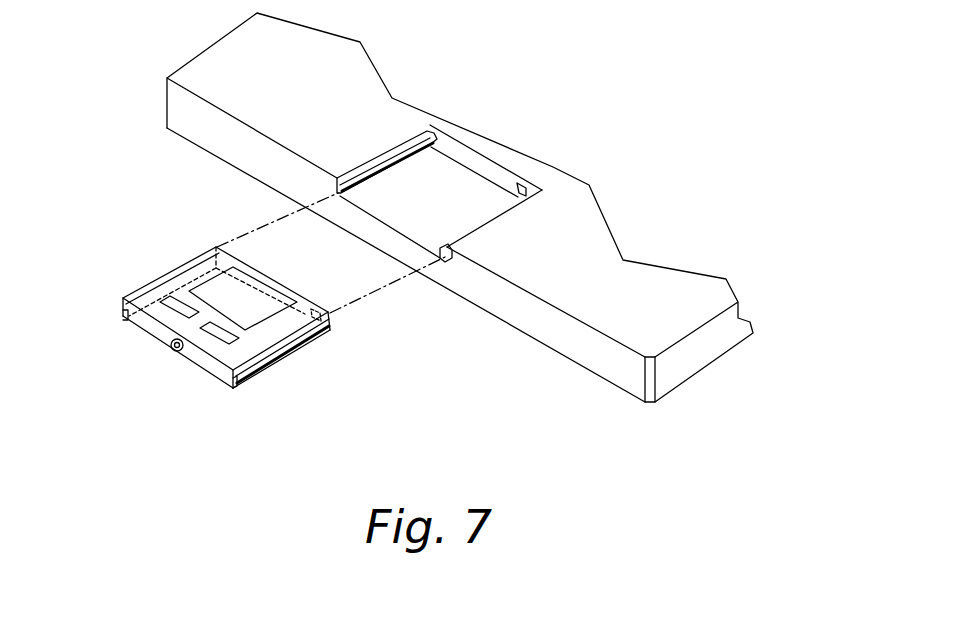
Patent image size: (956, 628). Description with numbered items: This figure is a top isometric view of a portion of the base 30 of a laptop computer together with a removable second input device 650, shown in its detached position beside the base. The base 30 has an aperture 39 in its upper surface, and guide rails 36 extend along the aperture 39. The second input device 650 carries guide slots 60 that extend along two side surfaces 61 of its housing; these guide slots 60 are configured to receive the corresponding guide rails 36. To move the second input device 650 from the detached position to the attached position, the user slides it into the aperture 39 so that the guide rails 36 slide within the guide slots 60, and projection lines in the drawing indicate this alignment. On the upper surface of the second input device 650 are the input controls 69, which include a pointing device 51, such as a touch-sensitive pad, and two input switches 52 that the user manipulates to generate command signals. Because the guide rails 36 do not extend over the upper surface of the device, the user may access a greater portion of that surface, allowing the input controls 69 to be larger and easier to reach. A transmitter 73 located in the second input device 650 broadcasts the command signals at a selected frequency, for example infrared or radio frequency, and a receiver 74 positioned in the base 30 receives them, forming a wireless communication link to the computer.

The base 30 is at (686, 365).
The guide rails 36 is at (426, 120).
The aperture 39 is at (447, 183).
The receiver 74 is at (524, 185).
The second input device 650 is at (117, 248).
The input controls 69 is at (181, 285).
The pointing device 51 is at (241, 296).
The input switches 52 is at (180, 308).
The side surfaces 61 is at (177, 266).
The guide slots 60 is at (122, 316).
The transmitter 73 is at (322, 305).